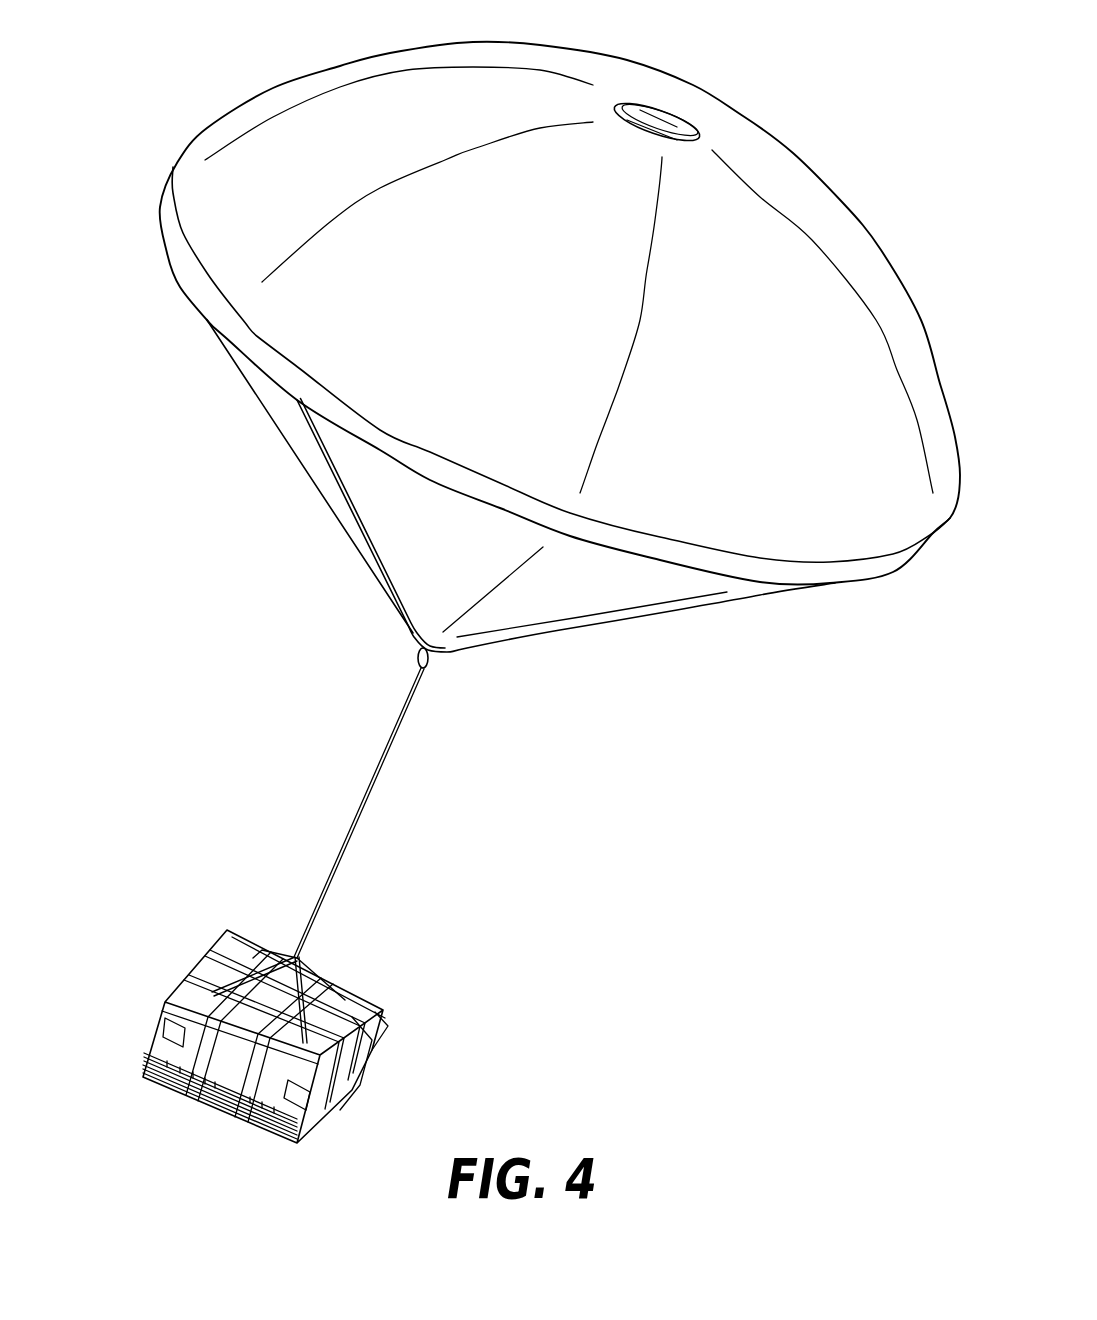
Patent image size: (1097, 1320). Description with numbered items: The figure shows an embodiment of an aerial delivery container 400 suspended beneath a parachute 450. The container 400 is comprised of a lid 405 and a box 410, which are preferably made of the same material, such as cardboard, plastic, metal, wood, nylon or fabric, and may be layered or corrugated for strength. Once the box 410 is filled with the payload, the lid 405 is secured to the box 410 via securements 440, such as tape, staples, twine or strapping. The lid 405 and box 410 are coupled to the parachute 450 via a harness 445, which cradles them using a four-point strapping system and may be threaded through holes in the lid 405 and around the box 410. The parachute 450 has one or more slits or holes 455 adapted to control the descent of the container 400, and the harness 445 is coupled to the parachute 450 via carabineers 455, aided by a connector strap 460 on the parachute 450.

The container 400 is at (130, 922).
The lid 405 is at (395, 1006).
The box 410 is at (240, 1077).
The securements 440 is at (240, 935).
The harness 445 is at (359, 836).
The parachute 450 is at (757, 213).
The holes 455 is at (668, 117).
The connector strap 460 is at (405, 657).